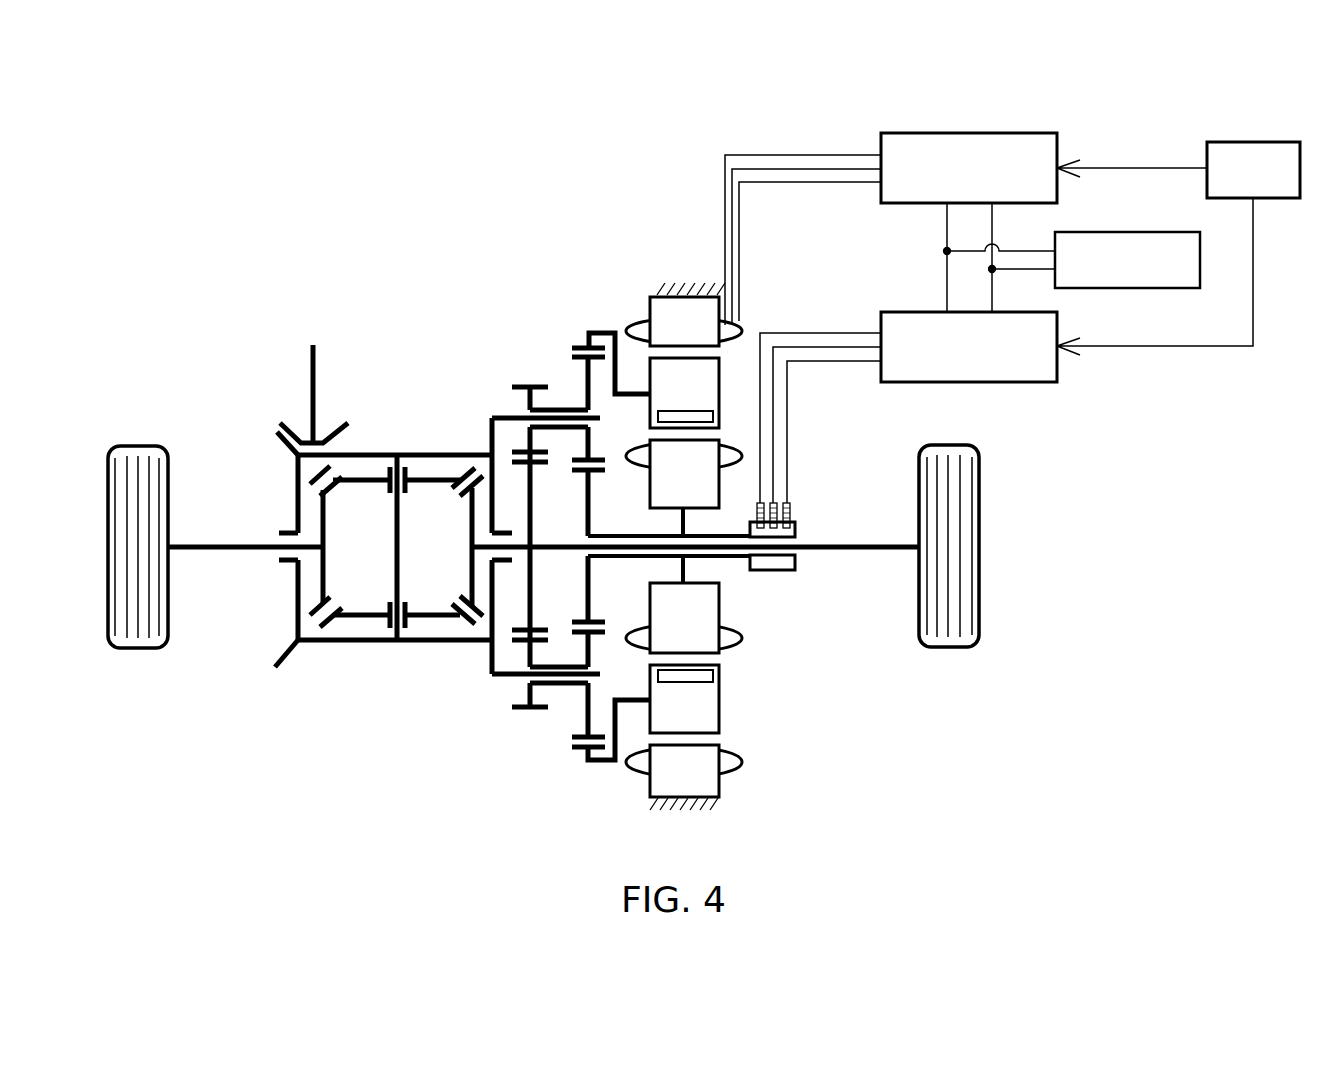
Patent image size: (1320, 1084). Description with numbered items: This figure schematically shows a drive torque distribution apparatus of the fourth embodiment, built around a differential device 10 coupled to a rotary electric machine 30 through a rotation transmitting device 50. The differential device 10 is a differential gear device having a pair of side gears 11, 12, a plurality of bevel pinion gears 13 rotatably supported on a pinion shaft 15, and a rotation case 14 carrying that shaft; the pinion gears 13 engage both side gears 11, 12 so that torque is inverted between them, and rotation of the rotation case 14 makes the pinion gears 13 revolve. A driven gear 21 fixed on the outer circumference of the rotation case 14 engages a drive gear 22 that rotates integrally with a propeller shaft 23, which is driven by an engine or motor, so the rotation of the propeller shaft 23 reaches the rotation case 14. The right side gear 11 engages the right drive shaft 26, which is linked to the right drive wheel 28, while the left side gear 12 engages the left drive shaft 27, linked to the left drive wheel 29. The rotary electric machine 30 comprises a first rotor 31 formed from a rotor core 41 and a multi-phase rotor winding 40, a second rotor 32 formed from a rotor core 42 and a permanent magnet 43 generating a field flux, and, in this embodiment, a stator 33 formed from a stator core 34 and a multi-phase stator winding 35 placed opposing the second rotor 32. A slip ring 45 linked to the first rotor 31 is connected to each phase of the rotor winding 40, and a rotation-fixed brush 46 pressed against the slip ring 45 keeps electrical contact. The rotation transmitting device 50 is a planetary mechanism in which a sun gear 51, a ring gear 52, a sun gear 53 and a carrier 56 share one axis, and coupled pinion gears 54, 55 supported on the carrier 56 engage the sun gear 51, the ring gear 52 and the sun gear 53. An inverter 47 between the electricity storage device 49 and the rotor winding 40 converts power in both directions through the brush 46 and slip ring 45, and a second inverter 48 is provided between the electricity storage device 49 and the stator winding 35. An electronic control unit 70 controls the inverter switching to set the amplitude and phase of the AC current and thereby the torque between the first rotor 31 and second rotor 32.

The differential device 10 is at (404, 676).
The side gear 11 is at (471, 570).
The side gear 12 is at (322, 573).
The pinion gears 13 is at (360, 478).
The rotation case 14 is at (446, 454).
The pinion shaft 15 is at (396, 528).
The driven gear 21 is at (276, 433).
The drive gear 22 is at (294, 420).
The propeller shaft 23 is at (312, 368).
The drive shaft 26 is at (887, 549).
The drive shaft 27 is at (223, 548).
The drive wheel 28 is at (955, 648).
The drive wheel 29 is at (135, 649).
The rotary electric machine 30 is at (673, 836).
The first rotor 31 is at (650, 496).
The second rotor 32 is at (719, 398).
The stator 33 is at (645, 297).
The stator core 34 is at (703, 785).
The stator winding 35 is at (732, 762).
The rotor winding 40 is at (728, 640).
The rotor core 41 is at (706, 607).
The rotor core 42 is at (707, 708).
The permanent magnet 43 is at (703, 675).
The slip ring 45 is at (797, 528).
The brush 46 is at (793, 505).
The inverter 47 is at (1058, 374).
The inverter 48 is at (880, 134).
The electricity storage device 49 is at (1133, 288).
The rotation transmitting device 50 is at (538, 762).
The sun gear 51 is at (592, 474).
The ring gear 52 is at (578, 346).
The sun gear 53 is at (540, 466).
The pinion gears 54 is at (598, 458).
The pinion gears 55 is at (516, 385).
The carrier 56 is at (497, 415).
The electronic control unit 70 is at (1207, 142).